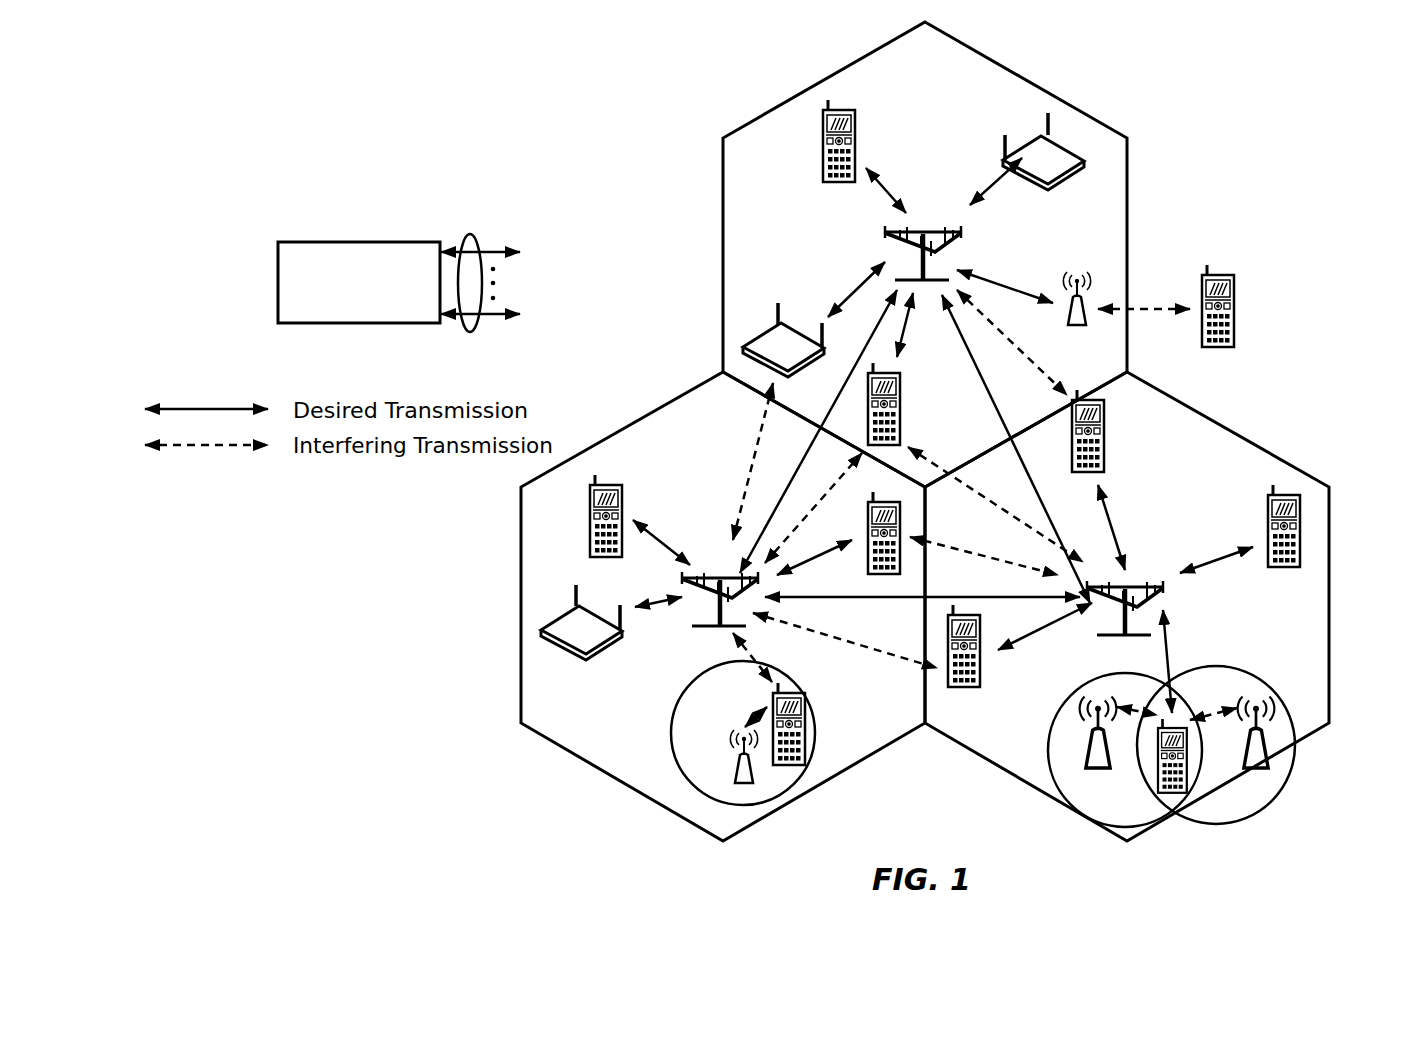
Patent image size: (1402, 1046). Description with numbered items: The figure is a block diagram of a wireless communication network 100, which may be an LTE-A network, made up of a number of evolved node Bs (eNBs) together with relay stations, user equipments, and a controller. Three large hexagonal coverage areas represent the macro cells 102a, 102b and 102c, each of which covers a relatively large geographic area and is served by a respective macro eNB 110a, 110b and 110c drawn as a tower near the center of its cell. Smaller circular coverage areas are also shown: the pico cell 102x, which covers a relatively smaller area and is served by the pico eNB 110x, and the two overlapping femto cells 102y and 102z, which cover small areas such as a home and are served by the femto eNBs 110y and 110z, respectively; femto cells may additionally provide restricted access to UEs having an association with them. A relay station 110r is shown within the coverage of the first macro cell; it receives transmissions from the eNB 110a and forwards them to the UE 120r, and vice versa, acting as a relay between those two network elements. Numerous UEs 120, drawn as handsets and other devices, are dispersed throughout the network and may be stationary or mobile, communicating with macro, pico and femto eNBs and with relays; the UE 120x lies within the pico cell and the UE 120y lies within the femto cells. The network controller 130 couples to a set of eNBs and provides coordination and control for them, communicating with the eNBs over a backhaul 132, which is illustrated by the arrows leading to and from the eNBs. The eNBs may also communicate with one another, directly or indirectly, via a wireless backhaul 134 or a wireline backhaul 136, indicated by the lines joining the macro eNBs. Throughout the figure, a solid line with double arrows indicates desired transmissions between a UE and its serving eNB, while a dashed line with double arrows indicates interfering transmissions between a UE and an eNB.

The wireless communication network 100 is at (512, 112).
The macro cell 102a is at (968, 47).
The macro cell 102b is at (668, 404).
The macro cell 102c is at (1200, 410).
The pico cell 102x is at (688, 690).
The femto cell 102y is at (1100, 672).
The femto cell 102z is at (1215, 667).
The macro eNB 110a is at (937, 232).
The macro eNB 110b is at (713, 573).
The macro eNB 110c is at (1137, 580).
The relay station 110r is at (1086, 322).
The pico eNB 110x is at (755, 780).
The femto eNB 110y is at (1096, 770).
The femto eNB 110z is at (1268, 748).
The user equipment (UE) 120 is at (823, 117).
The UE 120r is at (1235, 288).
The UE 120x is at (805, 702).
The UE 120y is at (1172, 790).
The network controller 130 is at (360, 242).
The backhaul 132 is at (470, 235).
The wireless backhaul 134 is at (818, 428).
The wireline backhaul 136 is at (1038, 500).